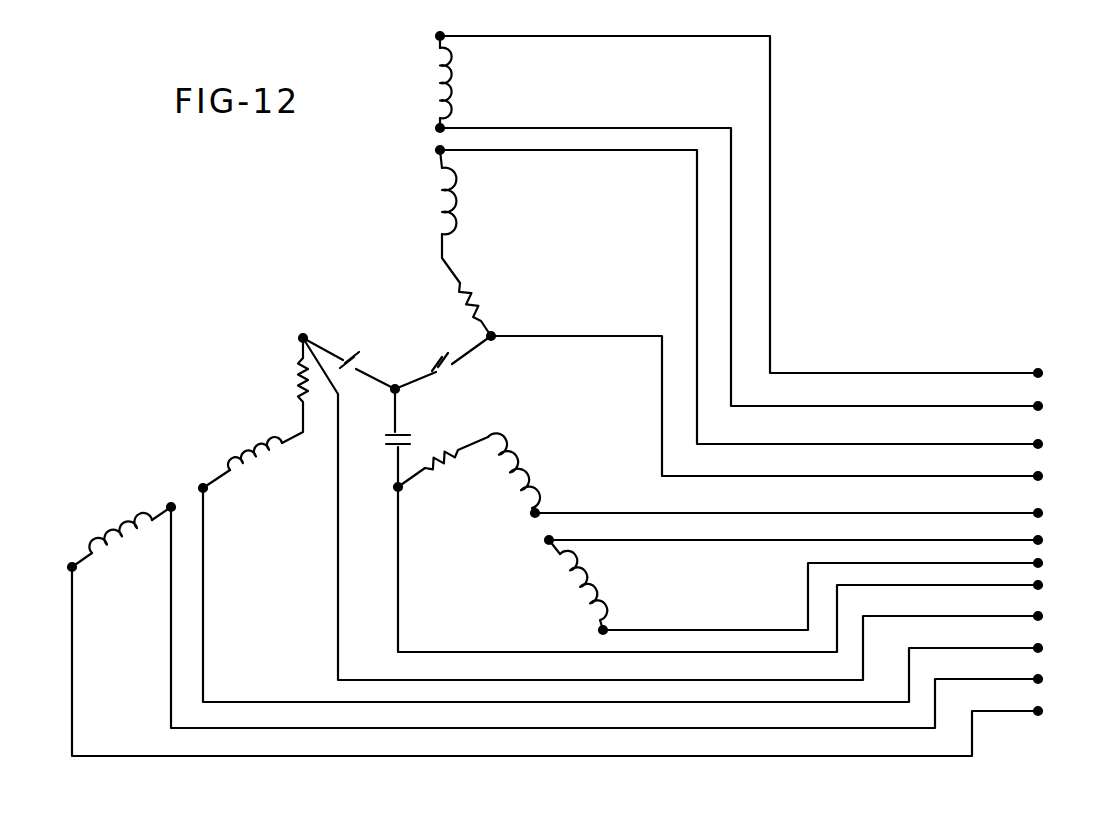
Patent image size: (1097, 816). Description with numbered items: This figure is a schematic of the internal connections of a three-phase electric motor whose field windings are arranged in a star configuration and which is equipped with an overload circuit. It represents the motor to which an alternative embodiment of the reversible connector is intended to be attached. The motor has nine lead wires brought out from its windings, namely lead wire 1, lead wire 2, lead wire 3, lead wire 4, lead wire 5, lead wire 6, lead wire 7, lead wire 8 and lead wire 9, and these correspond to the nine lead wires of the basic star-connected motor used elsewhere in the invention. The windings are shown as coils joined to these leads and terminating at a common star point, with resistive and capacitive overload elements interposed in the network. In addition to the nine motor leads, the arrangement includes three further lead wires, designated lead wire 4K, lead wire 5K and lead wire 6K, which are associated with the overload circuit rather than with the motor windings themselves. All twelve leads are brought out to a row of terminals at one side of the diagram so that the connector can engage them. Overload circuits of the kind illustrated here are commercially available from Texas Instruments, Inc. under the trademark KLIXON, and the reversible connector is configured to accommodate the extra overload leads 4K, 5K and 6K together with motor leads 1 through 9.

The lead wire 1 is at (739, 201).
The lead wire 4 is at (738, 267).
The lead wire 7 is at (738, 299).
The overload circuit lead wire 4K is at (733, 410).
The overload circuit lead wire 5K is at (719, 520).
The overload circuit lead wire 6K is at (679, 493).
The lead wire 8 is at (774, 479).
The lead wire 5 is at (793, 579).
The lead wire 2 is at (817, 598).
The lead wire 9 is at (626, 569).
The lead wire 6 is at (606, 602).
The lead wire 3 is at (558, 634).